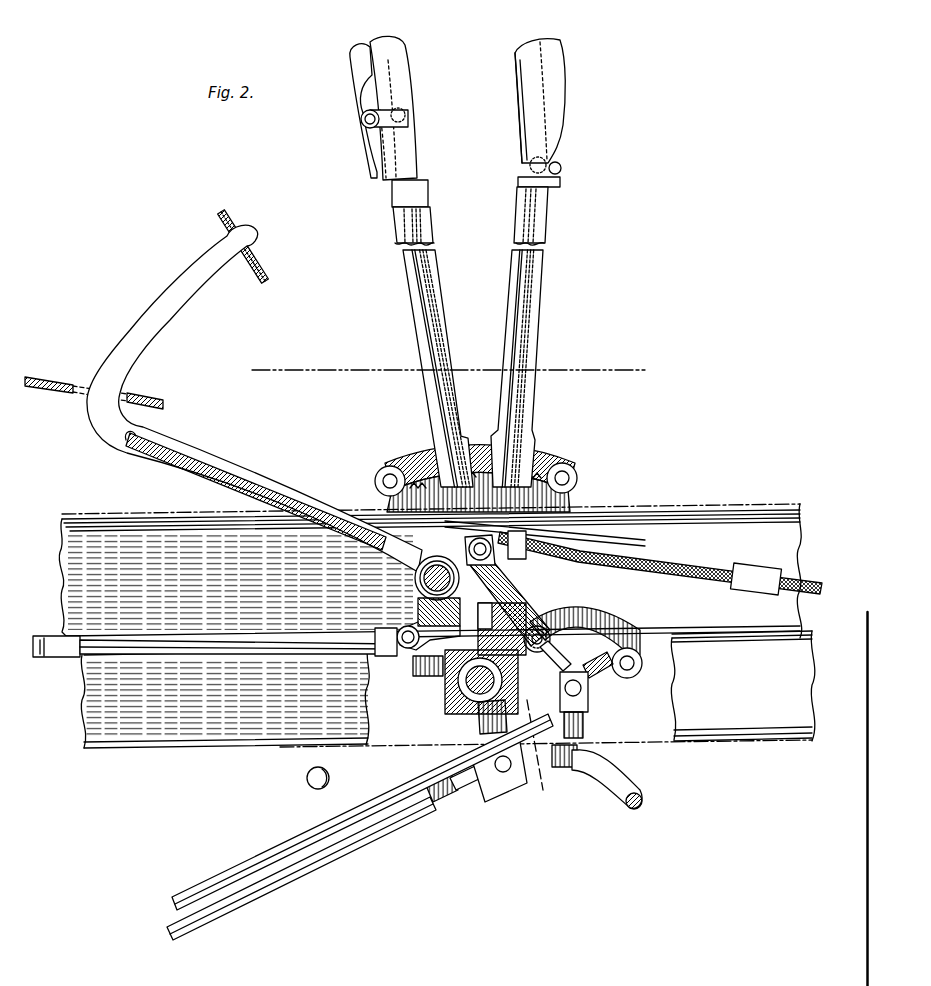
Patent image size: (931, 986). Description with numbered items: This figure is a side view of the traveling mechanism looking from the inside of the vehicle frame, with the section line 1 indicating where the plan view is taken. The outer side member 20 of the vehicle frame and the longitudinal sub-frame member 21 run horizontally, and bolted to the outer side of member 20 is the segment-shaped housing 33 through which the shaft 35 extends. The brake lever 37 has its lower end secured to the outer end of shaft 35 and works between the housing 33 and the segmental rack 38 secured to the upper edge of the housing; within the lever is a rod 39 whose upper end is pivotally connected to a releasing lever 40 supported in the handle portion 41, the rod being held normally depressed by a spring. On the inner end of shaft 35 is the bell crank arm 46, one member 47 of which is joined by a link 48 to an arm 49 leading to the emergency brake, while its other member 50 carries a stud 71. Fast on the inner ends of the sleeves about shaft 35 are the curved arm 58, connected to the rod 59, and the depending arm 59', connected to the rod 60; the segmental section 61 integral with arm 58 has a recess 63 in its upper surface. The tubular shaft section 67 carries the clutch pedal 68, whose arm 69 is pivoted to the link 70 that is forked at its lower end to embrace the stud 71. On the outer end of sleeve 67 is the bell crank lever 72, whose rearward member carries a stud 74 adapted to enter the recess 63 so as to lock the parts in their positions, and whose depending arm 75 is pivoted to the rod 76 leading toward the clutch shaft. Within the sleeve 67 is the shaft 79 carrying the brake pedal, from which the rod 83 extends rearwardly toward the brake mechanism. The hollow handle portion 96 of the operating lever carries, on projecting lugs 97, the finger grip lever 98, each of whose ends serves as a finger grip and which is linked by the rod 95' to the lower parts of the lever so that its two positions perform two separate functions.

The section line 1 is at (446, 372).
The outer side member 20 is at (710, 503).
The longitudinal sub-frame member 21 is at (448, 689).
The segment-shaped housing 33 is at (492, 479).
The shaft 35 is at (445, 683).
The brake lever 37 is at (537, 297).
The segmental rack 38 is at (422, 462).
The rod 39 is at (522, 202).
The releasing lever 40 is at (517, 95).
The handle portion 41 is at (564, 98).
The bell crank arm 46 is at (463, 694).
The bell crank member 47 is at (538, 752).
The link 48 is at (586, 712).
The arm 49 is at (632, 792).
The bell crank member 50 is at (543, 626).
The curved arm 58 is at (600, 632).
The rod 59 is at (362, 812).
The depending arm 59' is at (477, 717).
The rod 60 is at (298, 876).
The segmental section 61 is at (470, 632).
The recess 63 is at (498, 629).
The tubular shaft section 67 is at (415, 572).
The clutch pedal 68 is at (282, 493).
The arm 69 is at (478, 492).
The link 70 is at (500, 582).
The stud 71 is at (560, 660).
The bell crank lever 72 is at (545, 598).
The stud 74 is at (572, 596).
The depending arm 75 is at (402, 628).
The rod 76 is at (297, 636).
The shaft 79 is at (404, 590).
The rod 83 is at (762, 465).
The rod 95' is at (438, 368).
The hollow handle portion 96 is at (408, 80).
The lugs 97 is at (361, 121).
The finger grip lever 98 is at (372, 178).